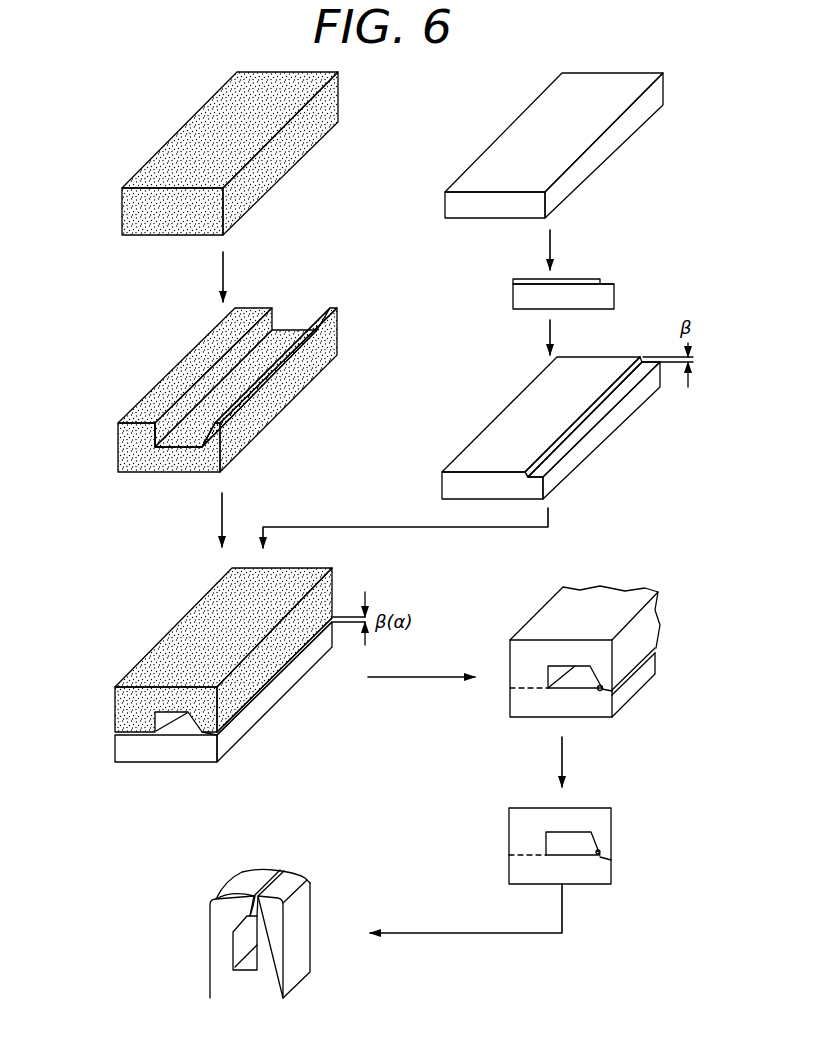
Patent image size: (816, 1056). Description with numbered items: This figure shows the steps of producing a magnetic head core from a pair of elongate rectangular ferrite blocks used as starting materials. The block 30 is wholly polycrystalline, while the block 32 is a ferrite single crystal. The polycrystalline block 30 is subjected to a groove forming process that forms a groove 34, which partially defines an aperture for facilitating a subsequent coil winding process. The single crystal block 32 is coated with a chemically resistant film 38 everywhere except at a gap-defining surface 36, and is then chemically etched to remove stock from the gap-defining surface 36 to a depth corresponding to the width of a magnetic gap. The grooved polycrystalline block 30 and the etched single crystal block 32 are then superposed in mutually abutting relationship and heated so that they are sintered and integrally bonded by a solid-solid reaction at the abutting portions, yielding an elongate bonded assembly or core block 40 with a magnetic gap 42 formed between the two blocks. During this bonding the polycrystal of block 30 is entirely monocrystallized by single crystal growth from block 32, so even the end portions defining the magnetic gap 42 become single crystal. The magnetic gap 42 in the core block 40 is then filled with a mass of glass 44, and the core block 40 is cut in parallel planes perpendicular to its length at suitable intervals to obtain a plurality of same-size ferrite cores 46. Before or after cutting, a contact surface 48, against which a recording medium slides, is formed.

The polycrystalline block 30 is at (183, 120).
The single crystal block 32 is at (520, 103).
The groove 34 is at (242, 368).
The gap-defining surface 36 is at (598, 282).
The chemically resistant film 38 is at (533, 282).
The core block 40 is at (527, 610).
The magnetic gap 42 is at (270, 688).
The mass of glass 44 is at (598, 852).
The ferrite core 46 is at (505, 845).
The contact surface 48 is at (252, 878).